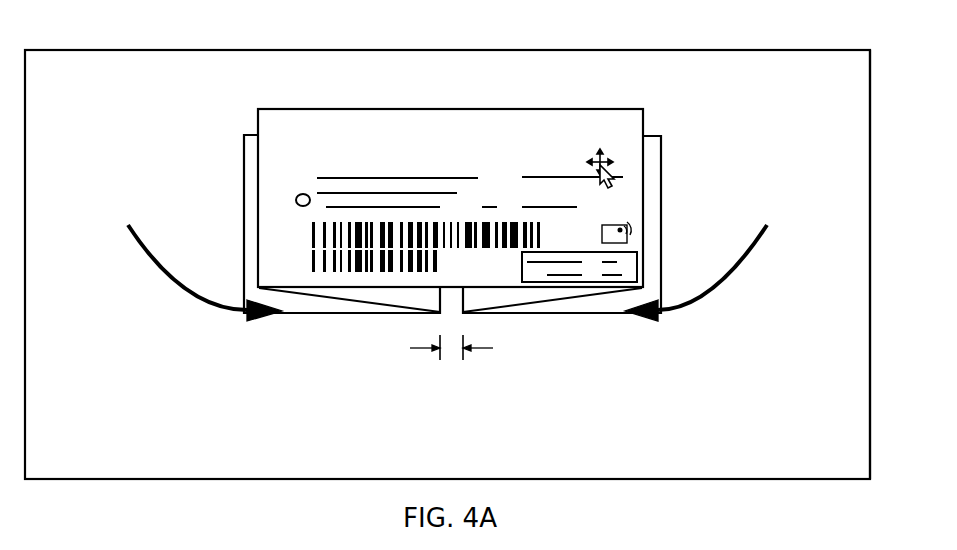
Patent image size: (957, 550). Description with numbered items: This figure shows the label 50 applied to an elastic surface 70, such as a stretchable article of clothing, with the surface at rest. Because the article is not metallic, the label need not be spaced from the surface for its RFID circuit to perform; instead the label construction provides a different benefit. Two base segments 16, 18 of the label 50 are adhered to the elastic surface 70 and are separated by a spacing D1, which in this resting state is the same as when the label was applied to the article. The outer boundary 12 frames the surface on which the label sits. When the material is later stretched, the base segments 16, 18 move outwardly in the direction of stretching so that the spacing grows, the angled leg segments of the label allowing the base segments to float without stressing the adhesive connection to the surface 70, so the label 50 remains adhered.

The media web / liner surface 12 is at (127, 68).
The base segment 16 is at (331, 302).
The base segment 18 is at (580, 302).
The label 50 is at (640, 97).
The elastic surface 70 is at (840, 369).
The spacing D1 is at (422, 353).